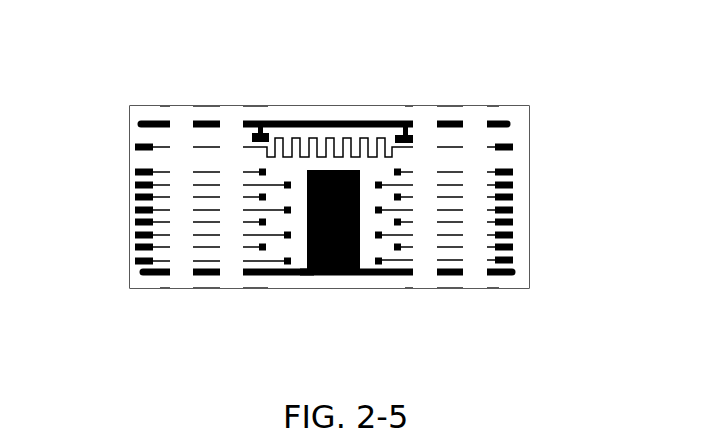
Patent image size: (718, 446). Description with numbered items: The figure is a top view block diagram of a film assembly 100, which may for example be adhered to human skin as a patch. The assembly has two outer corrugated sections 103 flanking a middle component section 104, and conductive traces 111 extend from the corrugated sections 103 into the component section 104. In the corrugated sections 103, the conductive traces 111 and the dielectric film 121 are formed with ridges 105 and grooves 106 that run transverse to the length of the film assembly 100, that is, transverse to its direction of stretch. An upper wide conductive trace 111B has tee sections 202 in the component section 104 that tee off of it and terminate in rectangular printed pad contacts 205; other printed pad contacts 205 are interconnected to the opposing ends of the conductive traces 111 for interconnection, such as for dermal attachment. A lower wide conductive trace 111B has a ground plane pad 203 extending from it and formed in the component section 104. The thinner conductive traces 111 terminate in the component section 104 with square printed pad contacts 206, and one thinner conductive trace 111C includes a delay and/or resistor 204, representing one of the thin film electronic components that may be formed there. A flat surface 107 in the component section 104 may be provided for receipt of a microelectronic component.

The film assembly 100 is at (576, 48).
The corrugated sections 103 is at (258, 62).
The middle component section 104 is at (405, 62).
The ridges 105 is at (210, 284).
The grooves 106 is at (182, 284).
The flat surface 107 is at (340, 286).
The conductive traces 111 is at (492, 199).
The wide conductive trace 111B is at (507, 123).
The thinner conductive trace 111C is at (505, 147).
The dielectric film 121 is at (529, 176).
The tee sections 202 is at (412, 136).
The ground plane pad 203 is at (305, 263).
The delay and/or resistor 204 is at (324, 137).
The printed pad contacts 205 is at (253, 138).
The printed pad contacts 206 is at (262, 172).